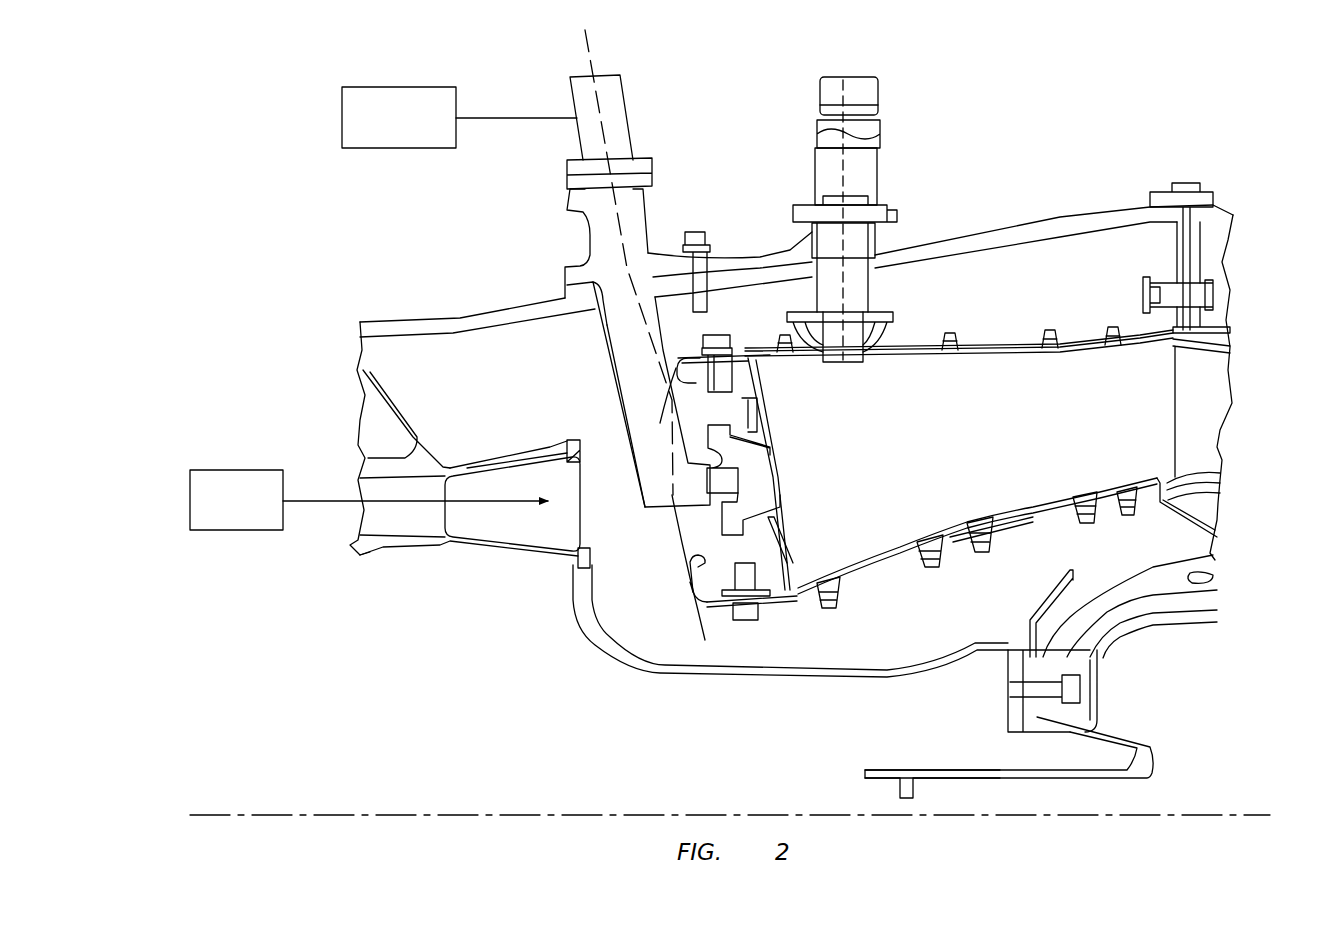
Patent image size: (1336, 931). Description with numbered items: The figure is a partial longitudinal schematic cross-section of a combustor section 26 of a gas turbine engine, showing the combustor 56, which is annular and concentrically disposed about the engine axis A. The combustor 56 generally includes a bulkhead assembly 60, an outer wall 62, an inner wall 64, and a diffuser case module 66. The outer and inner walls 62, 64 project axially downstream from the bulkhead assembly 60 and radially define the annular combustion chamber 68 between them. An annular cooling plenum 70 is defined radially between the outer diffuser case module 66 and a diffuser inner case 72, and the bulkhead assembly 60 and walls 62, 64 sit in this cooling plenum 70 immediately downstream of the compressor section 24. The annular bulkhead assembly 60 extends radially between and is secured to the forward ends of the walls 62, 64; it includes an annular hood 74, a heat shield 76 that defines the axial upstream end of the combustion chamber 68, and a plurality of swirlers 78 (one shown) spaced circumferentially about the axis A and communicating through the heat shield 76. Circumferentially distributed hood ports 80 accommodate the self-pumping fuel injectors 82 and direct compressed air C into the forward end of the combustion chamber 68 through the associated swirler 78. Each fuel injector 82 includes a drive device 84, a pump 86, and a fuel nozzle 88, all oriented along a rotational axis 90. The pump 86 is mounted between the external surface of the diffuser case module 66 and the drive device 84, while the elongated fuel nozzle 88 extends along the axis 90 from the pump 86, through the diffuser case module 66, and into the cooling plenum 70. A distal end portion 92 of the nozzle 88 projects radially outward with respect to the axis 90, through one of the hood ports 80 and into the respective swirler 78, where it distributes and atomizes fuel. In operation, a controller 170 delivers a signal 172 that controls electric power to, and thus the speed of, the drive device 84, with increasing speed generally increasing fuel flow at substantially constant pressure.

The compressor section 24 is at (252, 514).
The combustor section 26 is at (1105, 125).
The combustor 56 is at (923, 323).
The bulkhead assembly 60 is at (683, 570).
The outer wall 62 is at (977, 350).
The inner wall 64 is at (1013, 527).
The diffuser case module 66 is at (1085, 218).
The combustion chamber 68 is at (970, 453).
The cooling plenum 70 is at (572, 368).
The diffuser inner case 72 is at (827, 670).
The hood 74 is at (690, 582).
The heat shield 76 is at (786, 540).
The swirler 78 is at (757, 500).
The hood port 80 is at (672, 513).
The fuel injector 82 is at (555, 236).
The drive device 84 is at (627, 101).
The pump 86 is at (650, 212).
The fuel nozzle 88 is at (617, 390).
The rotational axis 90 is at (590, 47).
The distal end portion 92 is at (672, 528).
The controller 170 is at (389, 149).
The signal 172 is at (517, 120).
The engine axis A is at (1253, 813).
The compressed air C is at (500, 505).